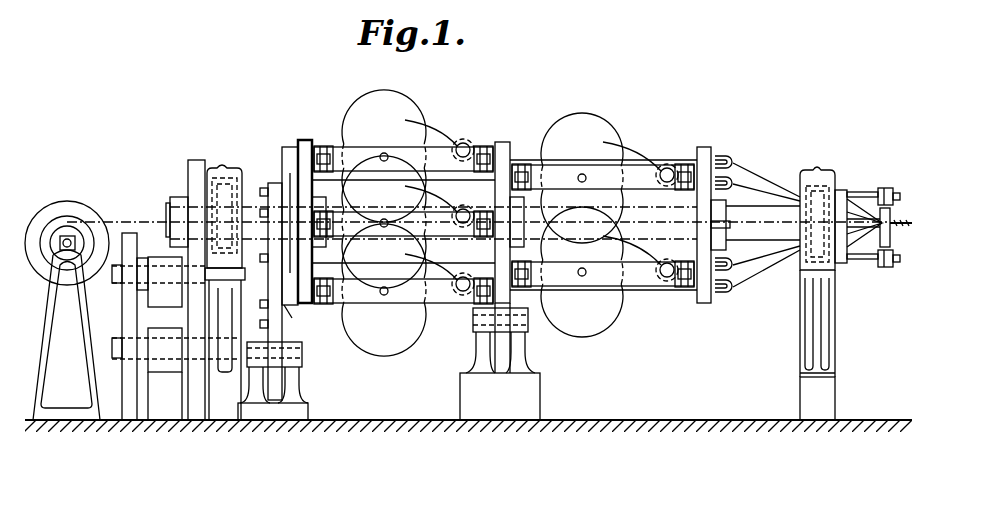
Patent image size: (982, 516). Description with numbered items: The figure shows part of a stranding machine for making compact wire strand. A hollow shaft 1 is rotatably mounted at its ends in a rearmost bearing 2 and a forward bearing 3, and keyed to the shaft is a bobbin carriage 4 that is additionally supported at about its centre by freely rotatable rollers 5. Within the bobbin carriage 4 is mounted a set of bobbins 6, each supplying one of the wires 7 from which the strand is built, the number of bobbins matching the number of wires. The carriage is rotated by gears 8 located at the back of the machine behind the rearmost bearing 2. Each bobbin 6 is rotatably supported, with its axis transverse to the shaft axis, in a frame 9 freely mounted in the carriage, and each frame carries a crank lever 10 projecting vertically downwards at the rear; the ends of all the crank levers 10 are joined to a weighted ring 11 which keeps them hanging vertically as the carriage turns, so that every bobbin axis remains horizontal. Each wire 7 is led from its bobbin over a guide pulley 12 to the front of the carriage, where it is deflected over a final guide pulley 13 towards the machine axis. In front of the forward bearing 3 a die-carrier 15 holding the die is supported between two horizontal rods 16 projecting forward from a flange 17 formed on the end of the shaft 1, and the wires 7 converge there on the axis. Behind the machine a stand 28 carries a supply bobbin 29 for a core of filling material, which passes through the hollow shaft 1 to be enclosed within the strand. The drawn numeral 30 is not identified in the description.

The hollow shaft 1 is at (254, 207).
The bearing 2 is at (221, 170).
The bearing 3 is at (818, 176).
The bobbin carriage 4 is at (517, 148).
The rollers 5 is at (498, 356).
The bobbins 6 is at (368, 308).
The wires 7 is at (432, 138).
The gears 8 is at (192, 320).
The frame 9 is at (330, 148).
The crank lever 10 is at (283, 168).
The weighted ring 11 is at (290, 310).
The guide pulley 12 is at (468, 144).
The final guide pulley 13 is at (732, 179).
The die-carrier 15 is at (894, 220).
The horizontal rods 16 is at (866, 193).
The flange 17 is at (840, 193).
The stand 28 is at (57, 367).
The supply bobbin 29 is at (64, 218).
The drive belt line 30 is at (119, 220).